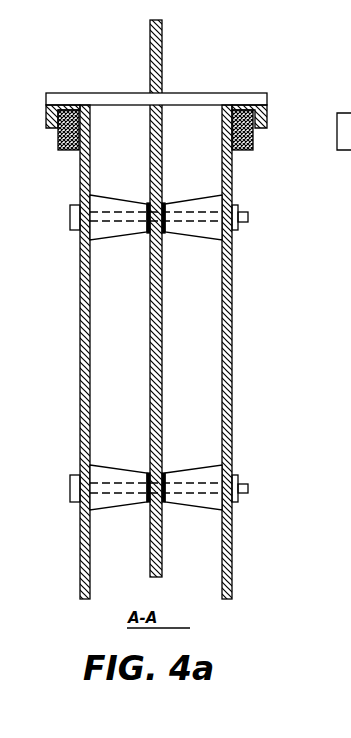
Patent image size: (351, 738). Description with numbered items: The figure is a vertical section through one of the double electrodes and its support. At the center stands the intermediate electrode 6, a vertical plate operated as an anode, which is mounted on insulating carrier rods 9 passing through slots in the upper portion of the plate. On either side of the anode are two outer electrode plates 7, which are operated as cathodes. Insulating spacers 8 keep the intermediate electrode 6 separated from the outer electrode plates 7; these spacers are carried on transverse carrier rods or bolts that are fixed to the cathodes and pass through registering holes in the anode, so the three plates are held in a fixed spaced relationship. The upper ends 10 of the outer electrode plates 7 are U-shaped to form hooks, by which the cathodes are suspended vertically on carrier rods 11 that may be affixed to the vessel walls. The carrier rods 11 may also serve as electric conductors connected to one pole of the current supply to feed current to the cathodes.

The intermediate electrode 6 is at (162, 34).
The outer electrode plates 7 is at (225, 280).
The insulating spacers 8 is at (128, 228).
The insulating carrier rods 9 is at (257, 100).
The upper ends 10 is at (79, 151).
The carrier rods 11 is at (64, 149).